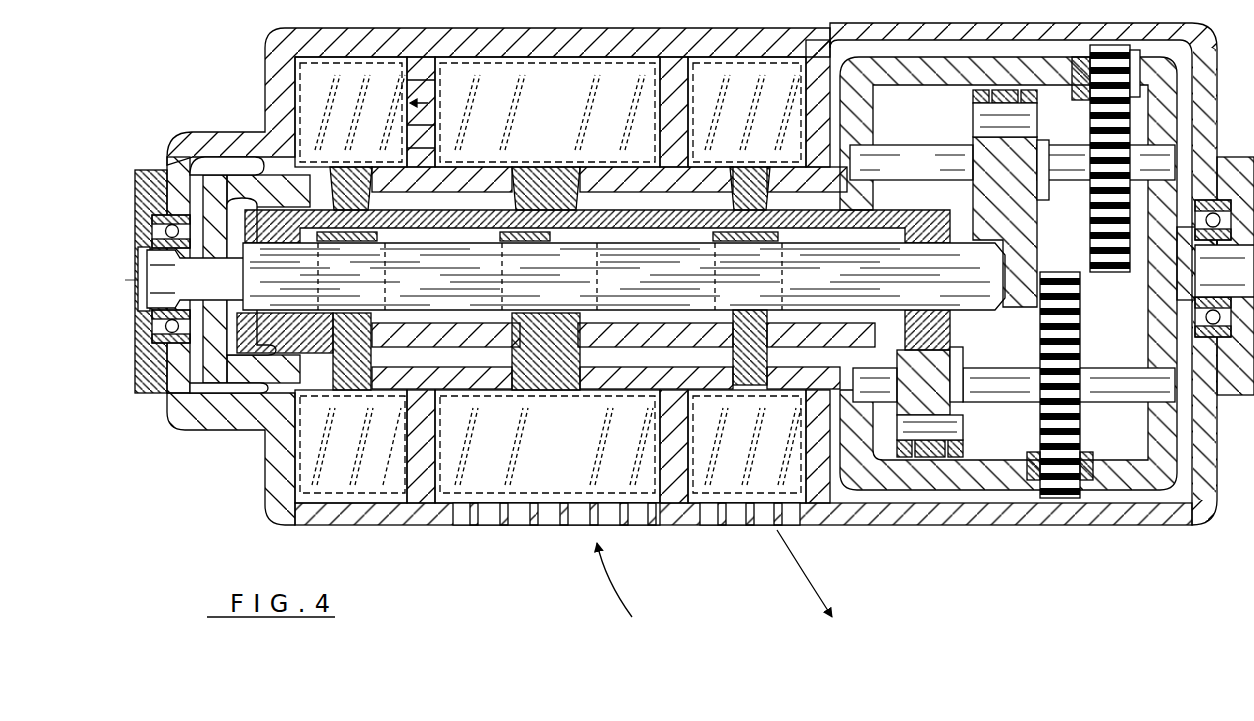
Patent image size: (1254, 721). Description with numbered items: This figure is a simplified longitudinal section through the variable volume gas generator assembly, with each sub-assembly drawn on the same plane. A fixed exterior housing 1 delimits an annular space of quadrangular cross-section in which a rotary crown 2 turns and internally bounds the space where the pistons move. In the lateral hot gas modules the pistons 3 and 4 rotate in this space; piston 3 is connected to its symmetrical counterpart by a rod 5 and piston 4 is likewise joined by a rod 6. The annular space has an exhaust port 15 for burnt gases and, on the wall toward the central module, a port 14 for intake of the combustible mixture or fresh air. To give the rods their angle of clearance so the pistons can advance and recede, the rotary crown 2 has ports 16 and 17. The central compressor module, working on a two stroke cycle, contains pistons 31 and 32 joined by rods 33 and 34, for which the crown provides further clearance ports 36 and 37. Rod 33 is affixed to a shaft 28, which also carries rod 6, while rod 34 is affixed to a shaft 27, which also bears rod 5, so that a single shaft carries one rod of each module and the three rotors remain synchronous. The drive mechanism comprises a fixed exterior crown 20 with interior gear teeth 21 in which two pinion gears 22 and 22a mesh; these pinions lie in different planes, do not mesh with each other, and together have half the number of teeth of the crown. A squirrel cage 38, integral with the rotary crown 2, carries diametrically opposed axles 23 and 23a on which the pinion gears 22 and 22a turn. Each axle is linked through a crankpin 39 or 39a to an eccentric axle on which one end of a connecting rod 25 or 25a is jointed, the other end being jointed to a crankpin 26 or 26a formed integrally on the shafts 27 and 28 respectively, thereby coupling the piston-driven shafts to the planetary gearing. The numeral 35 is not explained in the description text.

The fixed exterior housing 1 is at (318, 512).
The rotary crown 2 is at (193, 272).
The piston 3 is at (338, 129).
The piston 4 is at (345, 464).
The rod 5 is at (341, 203).
The rod 6 is at (343, 361).
The intake port 14 is at (422, 127).
The exhaust port 15 is at (753, 512).
The port 16 is at (394, 192).
The port 17 is at (374, 362).
The fixed exterior crown 20 is at (1118, 500).
The interior gear teeth 21 is at (1028, 480).
The pinion gear 22 is at (1065, 313).
The pinion gear 22a is at (1105, 128).
The axle 23 is at (1106, 396).
The axle 23a is at (891, 173).
The connecting rod 25 is at (964, 452).
The connecting rod 25a is at (962, 90).
The crankpin 26 is at (923, 382).
The crankpin 26a is at (1000, 208).
The shaft 27 is at (281, 229).
The shaft 28 is at (427, 272).
The piston 31 is at (542, 464).
The piston 32 is at (532, 129).
The rod 33 is at (531, 361).
The rod 34 is at (521, 211).
The ventilation slots 35 is at (548, 512).
The port 36 is at (592, 362).
The port 37 is at (597, 192).
The squirrel cage 38 is at (934, 487).
The crankpin 39 is at (957, 358).
The crankpin 39a is at (1030, 182).